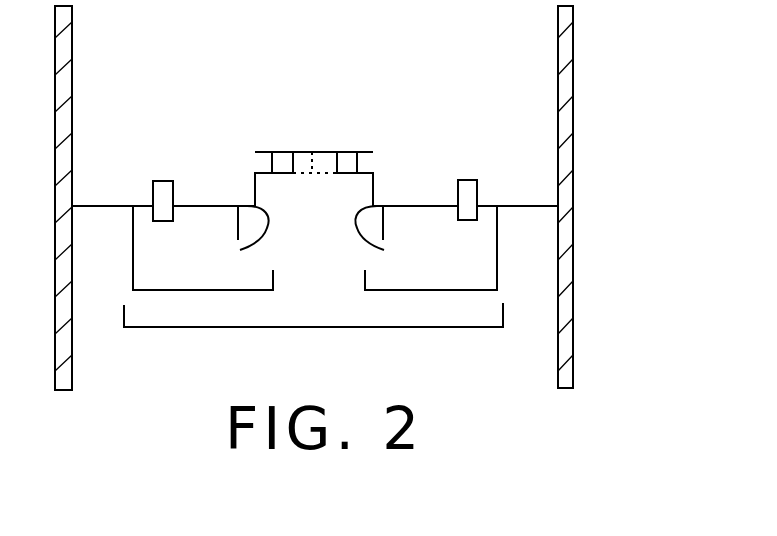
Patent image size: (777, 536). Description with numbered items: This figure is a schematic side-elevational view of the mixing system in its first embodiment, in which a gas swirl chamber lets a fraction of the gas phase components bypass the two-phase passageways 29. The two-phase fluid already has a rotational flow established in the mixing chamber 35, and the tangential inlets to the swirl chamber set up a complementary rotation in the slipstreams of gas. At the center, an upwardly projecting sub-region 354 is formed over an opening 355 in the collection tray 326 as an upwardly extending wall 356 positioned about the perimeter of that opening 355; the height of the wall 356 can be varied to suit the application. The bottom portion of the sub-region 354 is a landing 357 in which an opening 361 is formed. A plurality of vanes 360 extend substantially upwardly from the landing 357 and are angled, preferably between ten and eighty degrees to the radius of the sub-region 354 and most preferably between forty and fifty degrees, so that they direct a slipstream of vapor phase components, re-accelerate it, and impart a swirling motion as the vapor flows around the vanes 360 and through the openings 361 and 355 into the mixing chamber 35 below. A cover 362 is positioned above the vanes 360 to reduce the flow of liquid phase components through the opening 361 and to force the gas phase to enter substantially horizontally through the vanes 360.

The two-phase passageway 29 is at (153, 183).
The mixing chamber 35 is at (498, 252).
The collection tray 326 is at (537, 205).
The upwardly projecting sub-region 354 is at (369, 149).
The opening 355 is at (240, 250).
The upwardly extending wall 356 is at (380, 155).
The landing 357 is at (268, 174).
The vane 360 is at (307, 152).
The opening 361 is at (330, 152).
The cover 362 is at (286, 152).